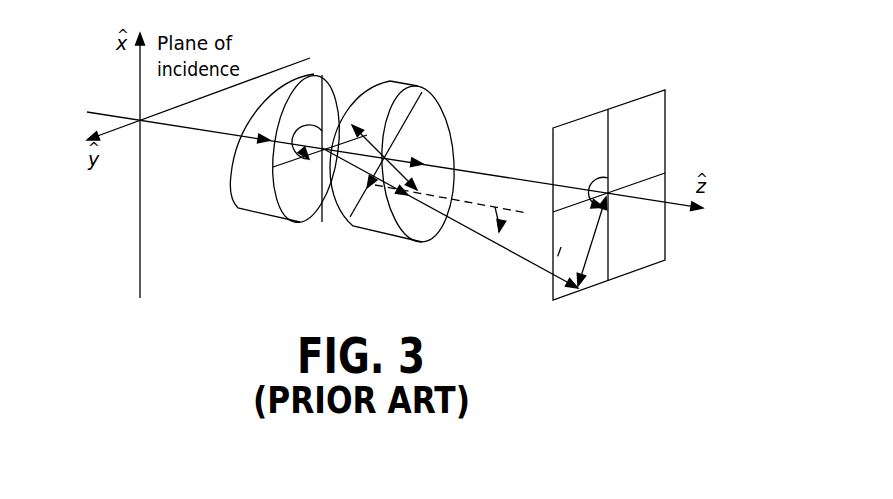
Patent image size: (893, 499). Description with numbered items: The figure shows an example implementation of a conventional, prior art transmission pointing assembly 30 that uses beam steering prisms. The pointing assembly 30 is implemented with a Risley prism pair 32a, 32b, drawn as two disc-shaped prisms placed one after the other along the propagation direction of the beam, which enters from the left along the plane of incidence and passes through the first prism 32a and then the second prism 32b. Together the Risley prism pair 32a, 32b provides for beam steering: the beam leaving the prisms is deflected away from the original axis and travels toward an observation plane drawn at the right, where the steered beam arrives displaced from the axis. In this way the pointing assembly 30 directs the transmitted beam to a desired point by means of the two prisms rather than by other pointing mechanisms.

The transmission pointing assembly 30 is at (408, 46).
The Risley prism 32a is at (253, 196).
The Risley prism 32b is at (397, 227).